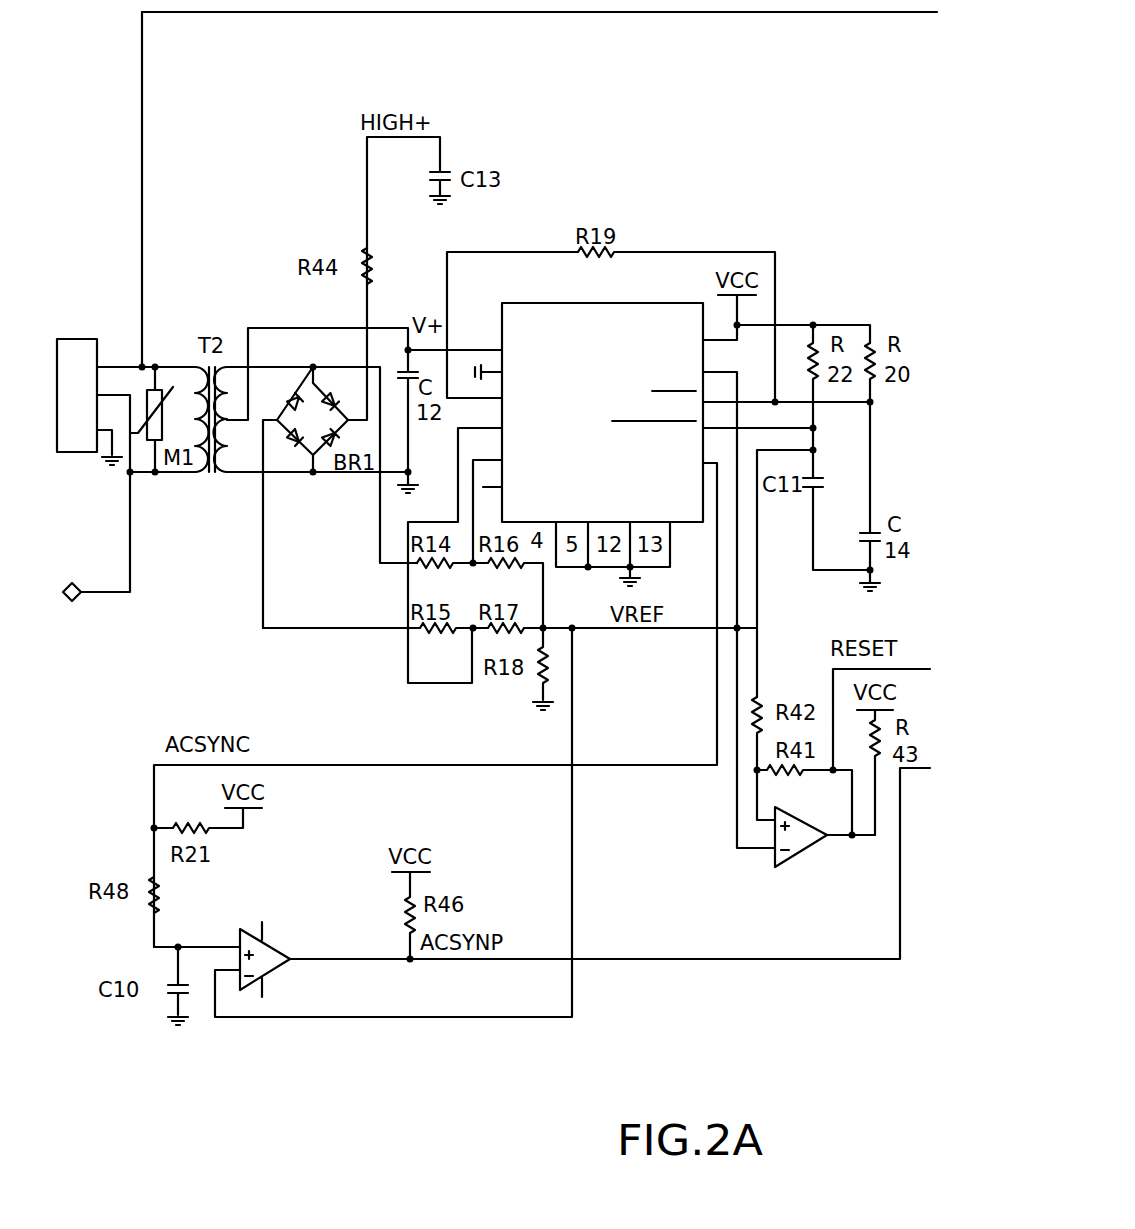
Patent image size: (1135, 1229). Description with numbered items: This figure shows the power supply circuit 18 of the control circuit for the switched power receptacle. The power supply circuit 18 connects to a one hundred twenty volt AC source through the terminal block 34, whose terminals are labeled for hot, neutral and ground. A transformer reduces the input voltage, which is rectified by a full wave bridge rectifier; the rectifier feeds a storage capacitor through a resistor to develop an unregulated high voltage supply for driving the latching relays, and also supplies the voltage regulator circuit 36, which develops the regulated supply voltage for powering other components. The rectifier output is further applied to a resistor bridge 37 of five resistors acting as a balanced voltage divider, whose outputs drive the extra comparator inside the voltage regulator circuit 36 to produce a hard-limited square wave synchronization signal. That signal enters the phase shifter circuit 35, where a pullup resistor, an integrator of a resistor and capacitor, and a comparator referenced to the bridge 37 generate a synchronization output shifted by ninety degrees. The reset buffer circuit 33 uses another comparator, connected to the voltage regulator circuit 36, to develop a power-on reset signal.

The power supply circuit 18 is at (648, 152).
The terminal block 34 is at (77, 339).
The voltage regulator circuit 36 is at (605, 303).
The resistor bridge 37 is at (556, 622).
The phase shifter circuit 35 is at (300, 910).
The reset buffer circuit 33 is at (822, 690).